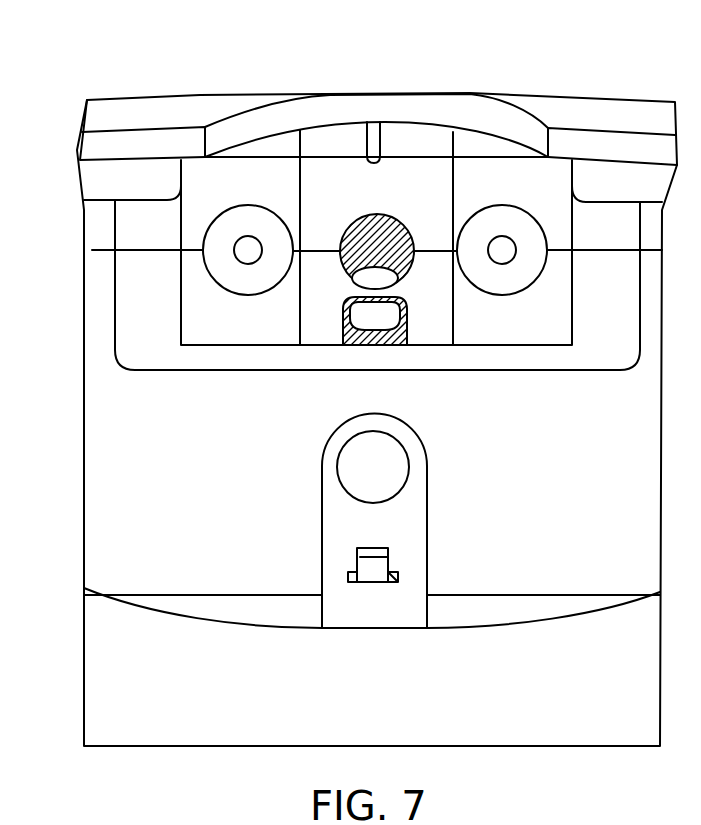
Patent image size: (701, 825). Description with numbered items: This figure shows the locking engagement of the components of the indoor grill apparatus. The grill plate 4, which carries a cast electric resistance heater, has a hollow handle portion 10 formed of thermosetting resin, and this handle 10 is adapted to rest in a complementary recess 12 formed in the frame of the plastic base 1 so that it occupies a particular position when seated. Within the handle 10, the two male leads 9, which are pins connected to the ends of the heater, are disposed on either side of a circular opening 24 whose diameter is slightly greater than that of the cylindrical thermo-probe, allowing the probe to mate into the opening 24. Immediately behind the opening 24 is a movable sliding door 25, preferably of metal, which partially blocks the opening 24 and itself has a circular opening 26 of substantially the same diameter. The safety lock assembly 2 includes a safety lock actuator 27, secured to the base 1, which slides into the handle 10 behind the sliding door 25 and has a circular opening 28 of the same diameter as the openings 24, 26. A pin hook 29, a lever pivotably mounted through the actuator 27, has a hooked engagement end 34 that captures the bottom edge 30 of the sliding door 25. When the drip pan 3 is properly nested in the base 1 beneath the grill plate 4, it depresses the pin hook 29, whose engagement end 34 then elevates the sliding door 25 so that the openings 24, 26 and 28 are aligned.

The base 1 is at (130, 679).
The safety lock assembly 2 is at (472, 422).
The drip pan 3 is at (470, 607).
The grill plate 4 is at (102, 100).
The male leads 9 is at (237, 254).
The handle portion 10 is at (522, 110).
The recess 12 is at (570, 610).
The circular opening 24 is at (395, 215).
The sliding door 25 is at (390, 277).
The circular opening 26 is at (357, 318).
The safety lock actuator 27 is at (332, 489).
The circular opening 28 is at (385, 467).
The pin hook 29 is at (398, 574).
The bottom edge 30 is at (353, 370).
The engagement end 34 is at (357, 553).